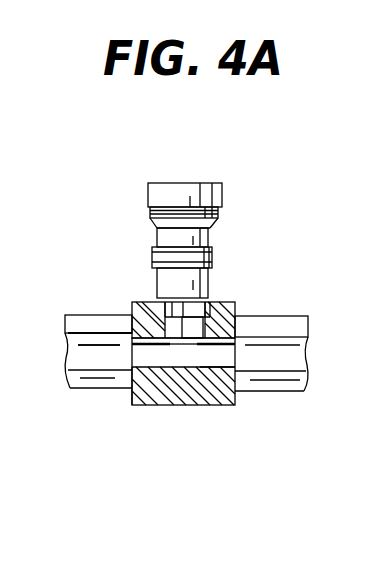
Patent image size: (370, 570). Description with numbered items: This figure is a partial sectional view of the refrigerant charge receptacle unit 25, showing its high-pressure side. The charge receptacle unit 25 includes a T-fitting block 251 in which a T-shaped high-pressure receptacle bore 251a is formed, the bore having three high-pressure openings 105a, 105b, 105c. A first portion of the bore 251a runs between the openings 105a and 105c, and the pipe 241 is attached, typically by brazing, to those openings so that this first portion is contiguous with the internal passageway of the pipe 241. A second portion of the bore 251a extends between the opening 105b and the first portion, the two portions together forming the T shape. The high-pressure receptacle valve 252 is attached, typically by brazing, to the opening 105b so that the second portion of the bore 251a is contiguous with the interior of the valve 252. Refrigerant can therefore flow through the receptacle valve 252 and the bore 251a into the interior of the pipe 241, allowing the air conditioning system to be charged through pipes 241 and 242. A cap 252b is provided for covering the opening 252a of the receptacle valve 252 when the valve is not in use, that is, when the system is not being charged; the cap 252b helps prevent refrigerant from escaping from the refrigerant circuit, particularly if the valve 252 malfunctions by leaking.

The charge receptacle unit 25 is at (245, 285).
The high-pressure receptacle valve 252 is at (154, 258).
The opening of receptacle valve 252a is at (157, 203).
The cap 252b is at (199, 195).
The high-pressure opening 105b is at (236, 310).
The high-pressure opening 105a is at (233, 404).
The high-pressure opening 105c is at (142, 392).
The T-fitting block 251 is at (213, 368).
The high-pressure receptacle bore 251a is at (183, 350).
The pipe 241 is at (112, 360).
The pipe 242 is at (76, 387).